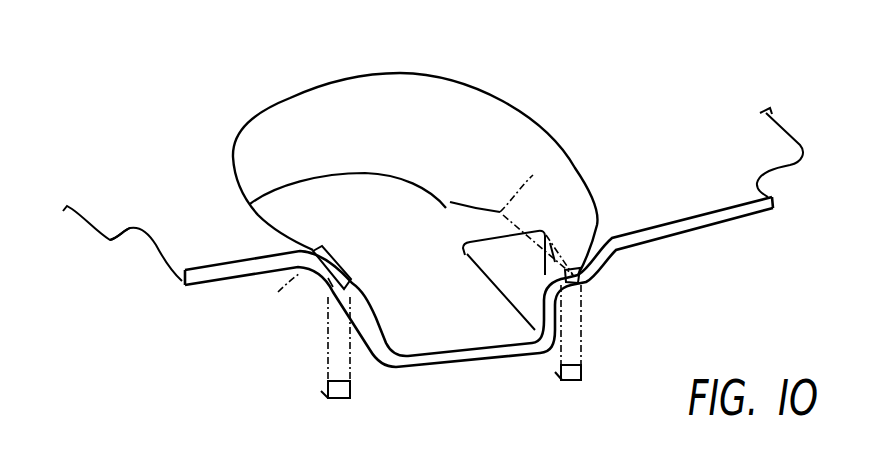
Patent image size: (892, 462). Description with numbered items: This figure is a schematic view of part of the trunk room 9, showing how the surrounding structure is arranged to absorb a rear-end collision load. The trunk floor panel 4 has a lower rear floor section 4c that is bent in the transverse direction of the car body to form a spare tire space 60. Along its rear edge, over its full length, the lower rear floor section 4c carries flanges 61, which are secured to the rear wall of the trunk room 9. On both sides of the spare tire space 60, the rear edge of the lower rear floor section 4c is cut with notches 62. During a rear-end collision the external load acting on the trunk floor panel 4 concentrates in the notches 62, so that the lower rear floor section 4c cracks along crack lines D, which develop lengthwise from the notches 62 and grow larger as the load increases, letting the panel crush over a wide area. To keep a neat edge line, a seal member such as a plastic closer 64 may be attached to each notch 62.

The spare tire space 60 is at (458, 118).
The flanges 61 is at (220, 282).
The notches 62 is at (343, 262).
The plastic closer 64 is at (332, 392).
The trunk floor panel 4 is at (170, 279).
The lower rear floor section 4c is at (120, 236).
The trunk room 9 is at (206, 99).
The crack lines D is at (533, 175).